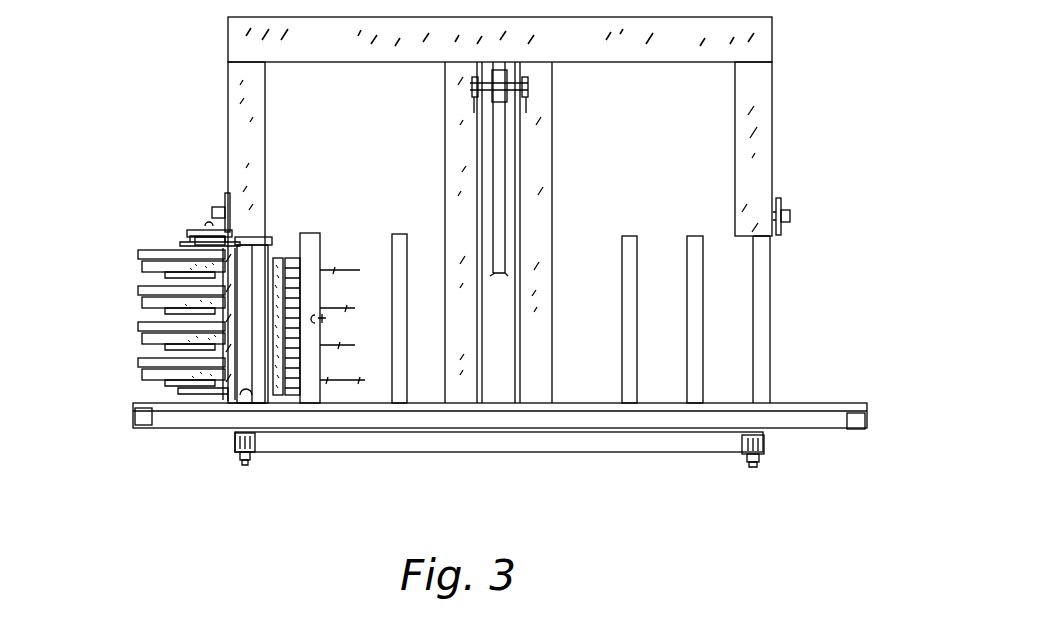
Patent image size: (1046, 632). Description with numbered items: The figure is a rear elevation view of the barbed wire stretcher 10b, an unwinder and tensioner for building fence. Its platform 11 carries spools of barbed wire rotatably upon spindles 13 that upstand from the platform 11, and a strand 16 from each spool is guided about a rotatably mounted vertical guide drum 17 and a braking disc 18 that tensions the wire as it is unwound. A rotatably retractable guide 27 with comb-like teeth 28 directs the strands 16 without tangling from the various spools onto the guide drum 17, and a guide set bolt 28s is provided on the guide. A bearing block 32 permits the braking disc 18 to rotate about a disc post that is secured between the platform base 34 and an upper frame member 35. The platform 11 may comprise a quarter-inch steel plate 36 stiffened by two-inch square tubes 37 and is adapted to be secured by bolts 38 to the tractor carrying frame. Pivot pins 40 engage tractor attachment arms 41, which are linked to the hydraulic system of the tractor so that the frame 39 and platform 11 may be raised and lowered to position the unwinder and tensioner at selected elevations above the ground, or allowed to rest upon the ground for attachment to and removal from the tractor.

The barbed wire stretcher 10b is at (640, 175).
The platform 11 is at (832, 388).
The spindles 13 is at (695, 277).
The strand 16 is at (345, 268).
The guide drum 17 is at (499, 453).
The braking disc 18 is at (132, 252).
The rotatably retractable guide 27 is at (316, 228).
The comb-like teeth 28 is at (286, 258).
The guide set bolt 28s is at (326, 318).
The bearing block 32 is at (135, 208).
The platform base 34 is at (800, 372).
The upper frame member 35 is at (200, 230).
The steel plate 36 is at (663, 403).
The square tubes 37 is at (185, 420).
The bolts 38 is at (258, 462).
The frame 39 is at (778, 86).
The pivot pins 40 is at (528, 87).
The tractor attachment arms 41 is at (503, 172).